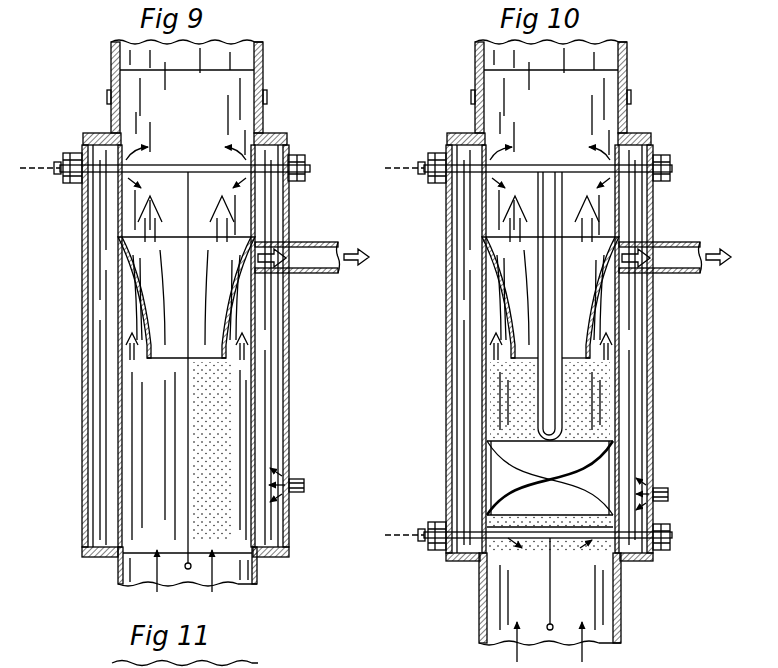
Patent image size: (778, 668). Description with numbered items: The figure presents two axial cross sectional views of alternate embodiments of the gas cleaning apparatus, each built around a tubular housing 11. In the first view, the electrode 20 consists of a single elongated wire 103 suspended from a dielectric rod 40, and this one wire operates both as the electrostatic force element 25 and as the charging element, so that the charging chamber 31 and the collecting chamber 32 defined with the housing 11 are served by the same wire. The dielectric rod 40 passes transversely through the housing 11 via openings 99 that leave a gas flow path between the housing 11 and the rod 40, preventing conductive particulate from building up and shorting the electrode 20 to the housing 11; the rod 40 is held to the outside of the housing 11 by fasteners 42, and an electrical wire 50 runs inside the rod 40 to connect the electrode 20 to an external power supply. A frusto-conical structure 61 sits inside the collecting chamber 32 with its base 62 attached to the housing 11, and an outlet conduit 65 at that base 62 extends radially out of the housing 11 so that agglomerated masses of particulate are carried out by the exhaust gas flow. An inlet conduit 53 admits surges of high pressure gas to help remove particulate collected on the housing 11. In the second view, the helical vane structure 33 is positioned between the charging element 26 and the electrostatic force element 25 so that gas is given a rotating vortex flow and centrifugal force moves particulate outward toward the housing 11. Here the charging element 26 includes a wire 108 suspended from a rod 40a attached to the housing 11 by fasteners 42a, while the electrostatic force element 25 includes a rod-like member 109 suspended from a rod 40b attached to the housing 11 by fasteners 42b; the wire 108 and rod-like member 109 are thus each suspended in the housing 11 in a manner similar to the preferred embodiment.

In FIG. 9, the housing 11 is at (114, 576).
In FIG. 10, the housing 11 is at (478, 586).
In FIG. 9, the elongated electrode 20 is at (184, 443).
In FIG. 10, the electrostatic force element 25 is at (566, 303).
In FIG. 10, the charging element 26 is at (546, 611).
In FIG. 10, the charging chamber 31 is at (520, 596).
In FIG. 10, the collecting chamber 32 is at (598, 427).
In FIG. 10, the helical vane structure 33 is at (520, 450).
In FIG. 9, the dielectric rod 40 is at (170, 165).
In FIG. 10, the rod 40a is at (552, 600).
In FIG. 10, the rod 40b is at (527, 166).
In FIG. 9, the fasteners 42 is at (68, 156).
In FIG. 10, the fasteners 42a is at (435, 522).
In FIG. 10, the fasteners 42b is at (438, 185).
In FIG. 9, the electrical wire 50 is at (41, 173).
In FIG. 10, the electrical wire 50 is at (406, 173).
In FIG. 9, the inlet conduit 53 is at (300, 480).
In FIG. 10, the inlet conduit 53 is at (668, 489).
In FIG. 9, the frusto-conical structure 61 is at (140, 306).
In FIG. 10, the frusto-conical structure 61 is at (502, 303).
In FIG. 9, the base 62 is at (118, 240).
In FIG. 10, the base 62 is at (482, 240).
In FIG. 9, the outlet conduit 65 is at (313, 276).
In FIG. 10, the outlet conduit 65 is at (678, 276).
In FIG. 9, the openings 99 is at (186, 151).
In FIG. 10, the openings 99 is at (550, 151).
In FIG. 9, the single elongated wire 103 is at (186, 326).
In FIG. 10, the wire 108 is at (588, 597).
In FIG. 10, the rod-like member 109 is at (546, 301).